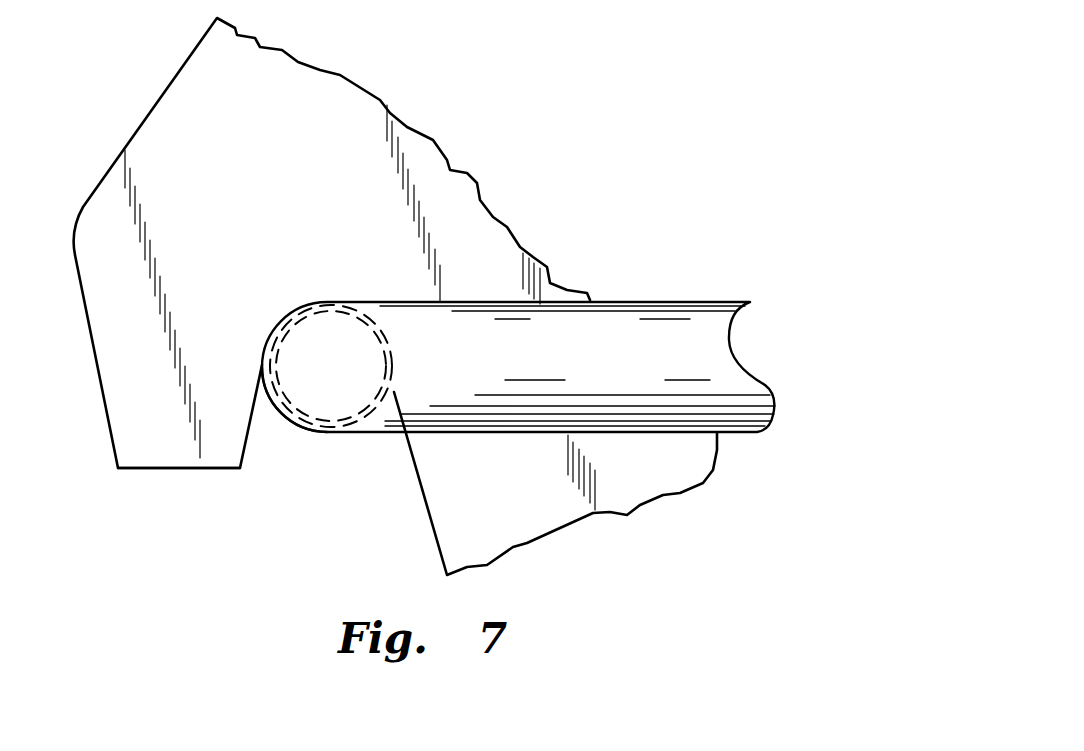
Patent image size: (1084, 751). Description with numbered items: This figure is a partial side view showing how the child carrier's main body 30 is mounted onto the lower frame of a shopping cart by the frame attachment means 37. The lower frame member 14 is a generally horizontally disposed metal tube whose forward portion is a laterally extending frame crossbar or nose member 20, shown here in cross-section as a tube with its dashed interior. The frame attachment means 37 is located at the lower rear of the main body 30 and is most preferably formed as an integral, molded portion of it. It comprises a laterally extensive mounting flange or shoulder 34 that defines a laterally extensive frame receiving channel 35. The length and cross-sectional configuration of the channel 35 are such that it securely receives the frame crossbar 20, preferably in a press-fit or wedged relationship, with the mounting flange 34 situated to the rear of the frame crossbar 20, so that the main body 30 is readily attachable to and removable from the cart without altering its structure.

The lower frame member 14 is at (707, 300).
The frame crossbar or nose member 20 is at (283, 420).
The main body 30 is at (632, 475).
The mounting flange 34 is at (160, 438).
The frame receiving channel 35 is at (368, 450).
The frame attachment means 37 is at (108, 500).